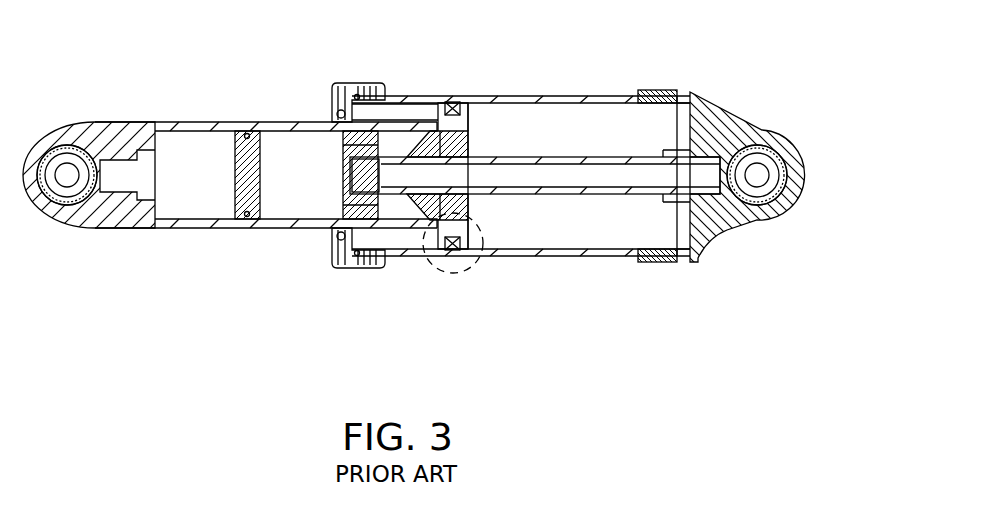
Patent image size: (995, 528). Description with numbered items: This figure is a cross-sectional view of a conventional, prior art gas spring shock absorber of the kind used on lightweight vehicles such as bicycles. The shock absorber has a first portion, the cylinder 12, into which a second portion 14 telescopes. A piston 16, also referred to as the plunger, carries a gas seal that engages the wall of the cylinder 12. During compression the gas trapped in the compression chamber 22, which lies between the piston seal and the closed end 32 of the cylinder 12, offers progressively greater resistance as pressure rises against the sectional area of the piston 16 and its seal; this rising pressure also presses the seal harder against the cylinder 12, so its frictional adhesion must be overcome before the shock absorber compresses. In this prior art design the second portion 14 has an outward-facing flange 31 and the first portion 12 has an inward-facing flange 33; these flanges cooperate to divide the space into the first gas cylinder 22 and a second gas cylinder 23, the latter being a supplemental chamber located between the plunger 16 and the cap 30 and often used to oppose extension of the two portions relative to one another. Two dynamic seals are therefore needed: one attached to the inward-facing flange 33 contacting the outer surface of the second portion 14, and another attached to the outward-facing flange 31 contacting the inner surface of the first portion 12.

The cylinder 12 is at (571, 255).
The second portion 14 is at (201, 125).
The piston 16 is at (461, 103).
The compression chamber 22 is at (549, 128).
The second gas cylinder 23 is at (395, 116).
The cap 30 is at (345, 88).
The outward-facing flange 31 is at (440, 112).
The closed end 32 is at (710, 252).
The inward-facing flange 33 is at (330, 245).